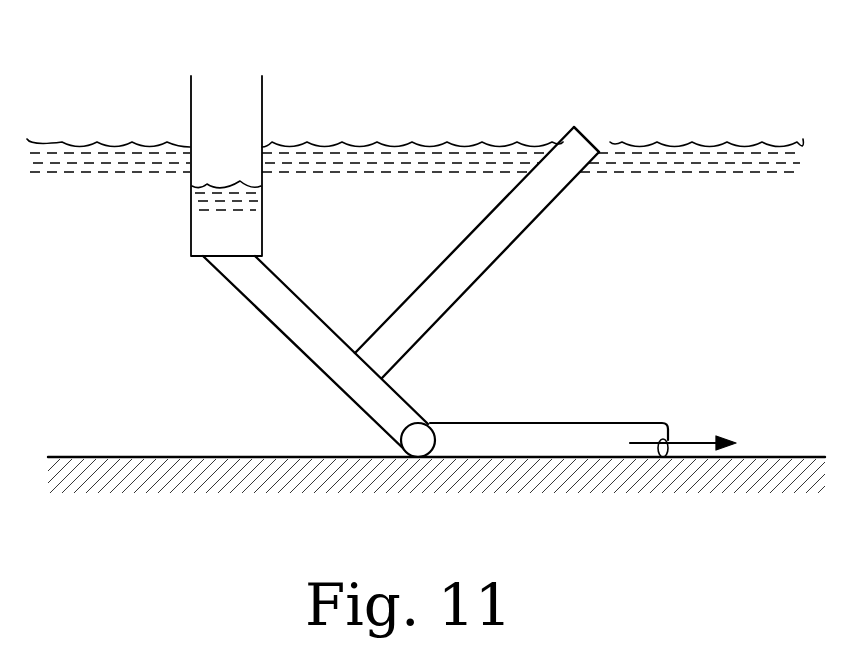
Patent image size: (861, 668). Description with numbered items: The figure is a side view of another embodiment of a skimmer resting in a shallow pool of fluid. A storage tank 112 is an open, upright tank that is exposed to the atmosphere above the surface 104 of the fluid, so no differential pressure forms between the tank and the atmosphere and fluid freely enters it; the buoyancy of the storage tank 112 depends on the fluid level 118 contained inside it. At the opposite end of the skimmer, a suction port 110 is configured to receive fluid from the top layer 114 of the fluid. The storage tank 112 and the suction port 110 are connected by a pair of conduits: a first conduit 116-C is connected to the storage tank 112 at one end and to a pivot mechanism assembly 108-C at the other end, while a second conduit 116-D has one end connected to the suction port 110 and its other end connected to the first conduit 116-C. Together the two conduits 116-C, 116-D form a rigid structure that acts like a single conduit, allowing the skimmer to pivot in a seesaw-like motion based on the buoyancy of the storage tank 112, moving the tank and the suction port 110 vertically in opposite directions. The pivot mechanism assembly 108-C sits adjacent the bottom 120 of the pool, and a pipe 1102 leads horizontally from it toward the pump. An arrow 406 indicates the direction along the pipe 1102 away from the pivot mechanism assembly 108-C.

The surface of the fluid 104 is at (80, 147).
The top layer of the fluid 114 is at (168, 148).
The storage tank 112 is at (262, 103).
The fluid level 118 is at (208, 180).
The suction port 110 is at (598, 128).
The first conduit 116-C is at (318, 372).
The second conduit 116-D is at (403, 302).
The pivot mechanism assembly 108-C is at (438, 443).
The pipe 1102 is at (617, 422).
The direction of motion 406 is at (697, 442).
The bottom 120 is at (783, 457).